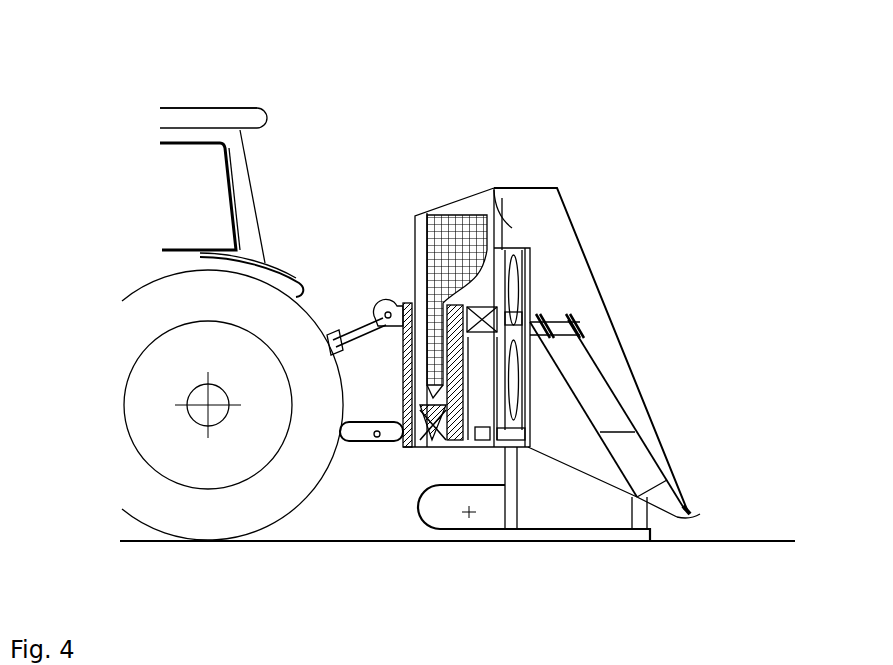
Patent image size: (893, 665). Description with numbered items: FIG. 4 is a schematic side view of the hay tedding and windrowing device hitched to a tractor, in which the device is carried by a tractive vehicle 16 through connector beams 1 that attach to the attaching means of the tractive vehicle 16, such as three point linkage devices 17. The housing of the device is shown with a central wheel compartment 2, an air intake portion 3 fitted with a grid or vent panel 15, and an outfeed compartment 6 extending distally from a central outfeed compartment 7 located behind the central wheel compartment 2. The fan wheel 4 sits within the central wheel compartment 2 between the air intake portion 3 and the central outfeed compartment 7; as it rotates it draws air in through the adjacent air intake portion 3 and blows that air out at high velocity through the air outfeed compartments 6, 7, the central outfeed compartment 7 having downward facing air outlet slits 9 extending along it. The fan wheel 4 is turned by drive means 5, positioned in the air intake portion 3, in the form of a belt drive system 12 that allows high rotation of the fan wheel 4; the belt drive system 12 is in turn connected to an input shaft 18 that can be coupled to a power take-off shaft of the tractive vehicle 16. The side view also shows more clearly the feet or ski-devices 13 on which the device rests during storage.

The connector beams 1 is at (403, 358).
The central wheel compartment 2 is at (515, 227).
The air intake portion 3 is at (415, 283).
The fan wheel 4 is at (533, 250).
The drive means 5 is at (497, 200).
The air outfeed compartments 6 is at (597, 378).
The central outfeed compartment 7 is at (583, 292).
The air outlet slits 9 is at (672, 512).
The belt drive system 12 is at (430, 428).
The feet or ski-devices 13 is at (468, 512).
The grid or vent panel 15 is at (415, 216).
The tractive vehicle 16 is at (212, 133).
The three point linkage devices 17 is at (350, 432).
The input shaft 18 is at (432, 428).